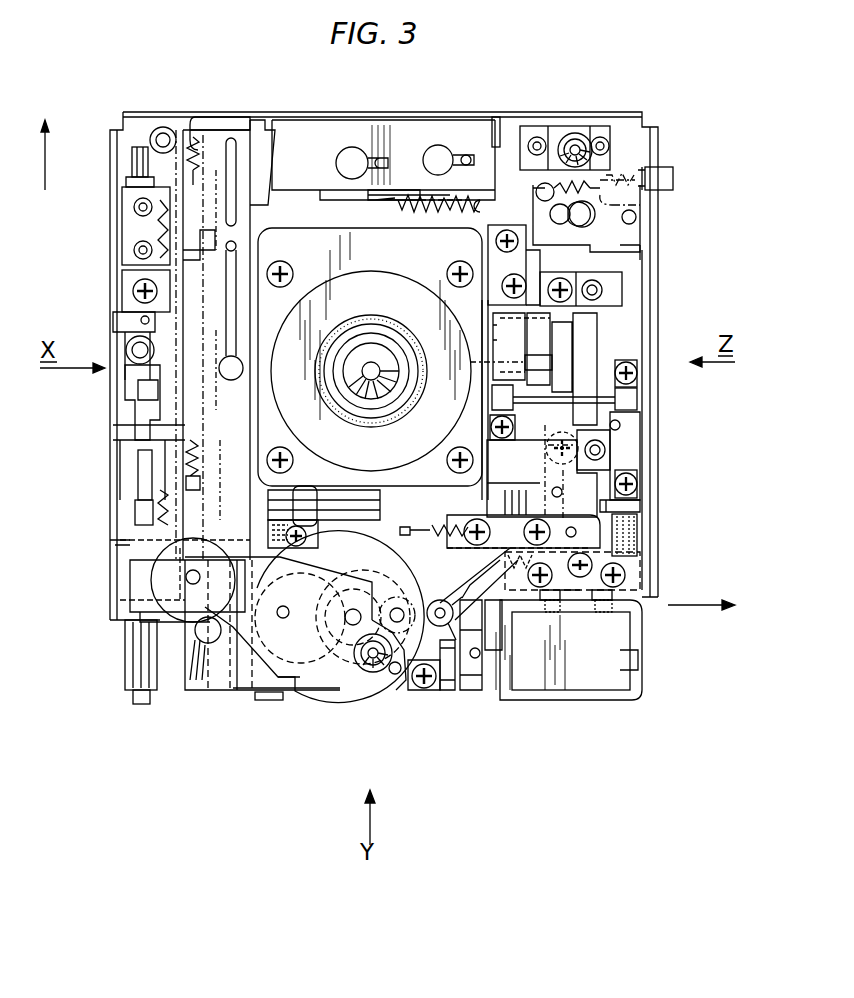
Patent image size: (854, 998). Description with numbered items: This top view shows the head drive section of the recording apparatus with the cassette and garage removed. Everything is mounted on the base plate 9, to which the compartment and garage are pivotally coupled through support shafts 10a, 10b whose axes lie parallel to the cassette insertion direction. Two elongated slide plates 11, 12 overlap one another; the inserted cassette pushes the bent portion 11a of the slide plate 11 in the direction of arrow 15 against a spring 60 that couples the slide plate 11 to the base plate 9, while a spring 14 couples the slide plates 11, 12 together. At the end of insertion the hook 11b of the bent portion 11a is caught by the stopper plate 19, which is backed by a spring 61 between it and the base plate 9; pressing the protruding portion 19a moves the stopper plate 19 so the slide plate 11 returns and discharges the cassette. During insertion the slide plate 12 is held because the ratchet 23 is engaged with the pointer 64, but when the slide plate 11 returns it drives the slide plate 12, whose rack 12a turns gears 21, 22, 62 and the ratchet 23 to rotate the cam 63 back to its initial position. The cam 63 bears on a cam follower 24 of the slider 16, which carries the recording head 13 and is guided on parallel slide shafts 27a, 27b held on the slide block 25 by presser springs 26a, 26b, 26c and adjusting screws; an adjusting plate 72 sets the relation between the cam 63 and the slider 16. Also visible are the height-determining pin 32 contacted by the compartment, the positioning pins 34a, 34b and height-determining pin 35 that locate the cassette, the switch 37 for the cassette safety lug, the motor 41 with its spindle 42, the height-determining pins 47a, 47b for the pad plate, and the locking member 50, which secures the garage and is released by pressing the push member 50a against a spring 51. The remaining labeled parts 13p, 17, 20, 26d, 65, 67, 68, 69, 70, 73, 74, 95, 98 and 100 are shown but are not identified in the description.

The base plate 9 is at (640, 140).
The support shaft 10a is at (140, 650).
The support shaft 10b is at (132, 154).
The slide plate 11 is at (208, 130).
The bent portion 11a is at (225, 117).
The hook 11b is at (262, 125).
The slide plate 12 is at (175, 427).
The rack 12a is at (238, 672).
The recording head 13 is at (590, 360).
The lever 13' 13p is at (476, 366).
The spring 14 is at (188, 202).
The arrow 15 is at (45, 182).
The slider 16 is at (630, 530).
The cover plate 17 is at (560, 692).
The stopper plate 19 is at (372, 122).
The protruding portion 19a is at (496, 117).
The base block 20 is at (145, 602).
The gear 21 is at (175, 550).
The gear 22 is at (218, 655).
The ratchet 23 is at (365, 692).
The cam follower 24 is at (448, 694).
The slide block 25 is at (638, 450).
The presser spring 26a is at (305, 492).
The presser spring 26b is at (635, 503).
The presser spring 26c is at (640, 400).
The screw block 26d is at (490, 397).
The slide shaft 27a is at (625, 508).
The slide shaft 27b is at (620, 425).
The height-determining pin 32 is at (622, 427).
The positioning pin 34a is at (374, 672).
The positioning pin 34b is at (578, 135).
The height-determining pin 35 is at (163, 127).
The switch 37 is at (140, 510).
The motor 41 is at (330, 288).
The spindle 42 is at (374, 345).
The height-determining pin 47a is at (606, 452).
The height-determining pin 47b is at (602, 291).
The locking member 50 is at (650, 257).
The push member 50a is at (674, 182).
The spring 51 is at (620, 202).
The spring 60 is at (134, 250).
The spring 61 is at (442, 215).
The gear 62 is at (340, 592).
The cam 63 is at (404, 694).
The pointer 64 is at (430, 694).
The gear 65 is at (353, 609).
The screw 67 is at (518, 592).
The roller 68 is at (506, 622).
The screw 69 is at (582, 594).
The arm 70 is at (474, 694).
The adjusting plate 72 is at (500, 662).
The direction arrow 73 is at (695, 608).
The block 74 is at (130, 306).
The gear 95 is at (397, 601).
The foot 98 is at (266, 702).
The bracket 100 is at (567, 492).